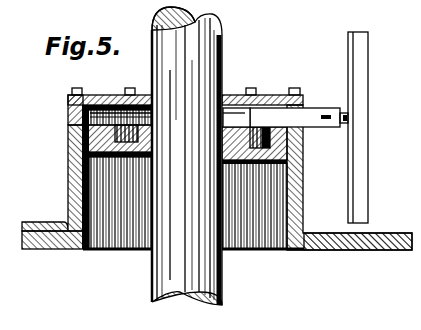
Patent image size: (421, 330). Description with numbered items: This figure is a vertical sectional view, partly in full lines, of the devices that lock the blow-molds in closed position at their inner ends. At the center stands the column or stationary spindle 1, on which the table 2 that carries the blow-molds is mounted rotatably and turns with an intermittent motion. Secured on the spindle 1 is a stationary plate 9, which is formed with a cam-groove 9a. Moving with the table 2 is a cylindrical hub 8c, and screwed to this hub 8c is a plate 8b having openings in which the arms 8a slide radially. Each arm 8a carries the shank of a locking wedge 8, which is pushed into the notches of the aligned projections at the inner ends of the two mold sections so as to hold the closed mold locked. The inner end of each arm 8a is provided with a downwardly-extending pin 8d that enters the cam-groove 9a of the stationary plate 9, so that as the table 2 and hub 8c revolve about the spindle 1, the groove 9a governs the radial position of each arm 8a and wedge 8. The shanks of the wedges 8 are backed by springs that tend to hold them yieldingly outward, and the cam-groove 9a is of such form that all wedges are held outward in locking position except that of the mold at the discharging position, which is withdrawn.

The column or stationary spindle 1 is at (158, 280).
The table 2 is at (352, 242).
The locking wedge 8 is at (368, 143).
The arm 8a is at (306, 117).
The plate 8b is at (265, 95).
The cylindrical hub 8c is at (68, 195).
The pin 8d is at (296, 146).
The stationary plate 9 is at (233, 160).
The cam-groove 9a is at (128, 150).